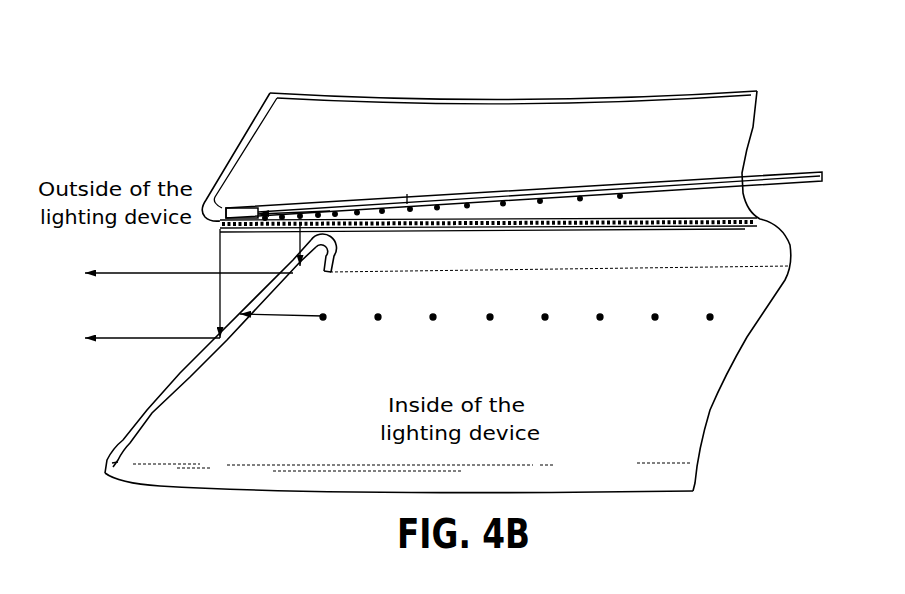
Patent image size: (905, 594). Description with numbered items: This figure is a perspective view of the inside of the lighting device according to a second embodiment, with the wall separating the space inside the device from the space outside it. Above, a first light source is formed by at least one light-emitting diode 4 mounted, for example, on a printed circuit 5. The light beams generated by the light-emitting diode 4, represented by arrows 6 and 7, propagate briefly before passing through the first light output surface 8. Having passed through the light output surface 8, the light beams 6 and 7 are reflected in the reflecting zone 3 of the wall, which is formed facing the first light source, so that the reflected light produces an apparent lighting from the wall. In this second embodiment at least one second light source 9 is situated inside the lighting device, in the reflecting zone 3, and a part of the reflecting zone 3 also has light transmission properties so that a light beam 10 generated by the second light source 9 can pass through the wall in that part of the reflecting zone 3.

The reflecting zone 3 is at (152, 400).
The light-emitting diode 4 is at (465, 208).
The printed circuit 5 is at (345, 197).
The light beam 6 is at (226, 248).
The light beam 7 is at (306, 248).
The first light output surface 8 is at (251, 210).
The second light source 9 is at (647, 322).
The light beam 10 is at (291, 321).